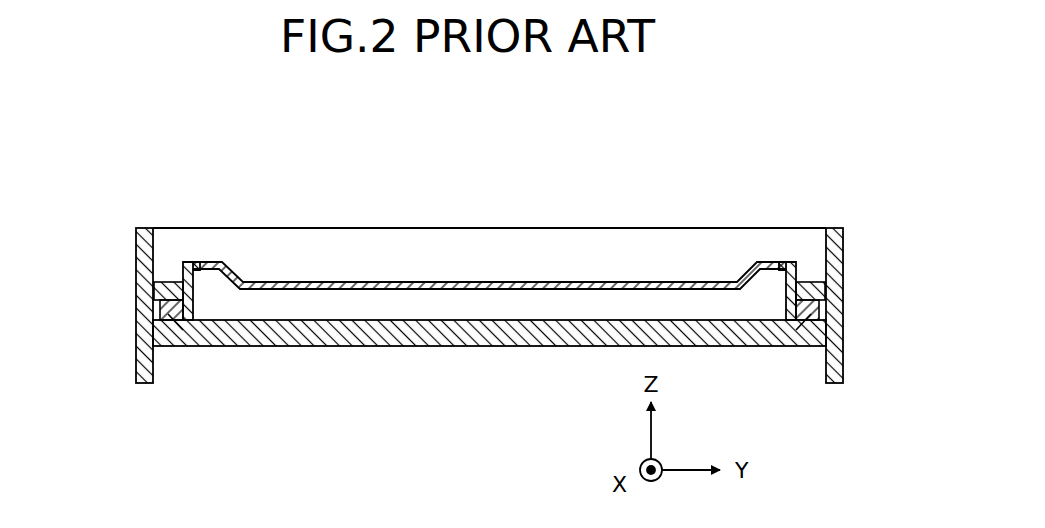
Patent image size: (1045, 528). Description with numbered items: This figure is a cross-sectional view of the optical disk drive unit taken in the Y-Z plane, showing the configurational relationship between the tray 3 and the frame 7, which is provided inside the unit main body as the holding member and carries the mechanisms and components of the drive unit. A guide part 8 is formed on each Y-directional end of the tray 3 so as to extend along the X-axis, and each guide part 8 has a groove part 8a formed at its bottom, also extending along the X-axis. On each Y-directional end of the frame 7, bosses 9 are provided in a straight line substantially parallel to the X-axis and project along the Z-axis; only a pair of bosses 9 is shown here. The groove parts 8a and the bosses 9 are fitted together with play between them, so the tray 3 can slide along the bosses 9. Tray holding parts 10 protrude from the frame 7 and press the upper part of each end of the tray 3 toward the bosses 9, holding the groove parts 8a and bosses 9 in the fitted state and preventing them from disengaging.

The tray 3 is at (450, 280).
The frame 7 is at (483, 347).
The guide part 8 is at (186, 262).
The groove part 8a is at (183, 325).
The boss 9 is at (163, 313).
The tray holding part 10 is at (170, 280).